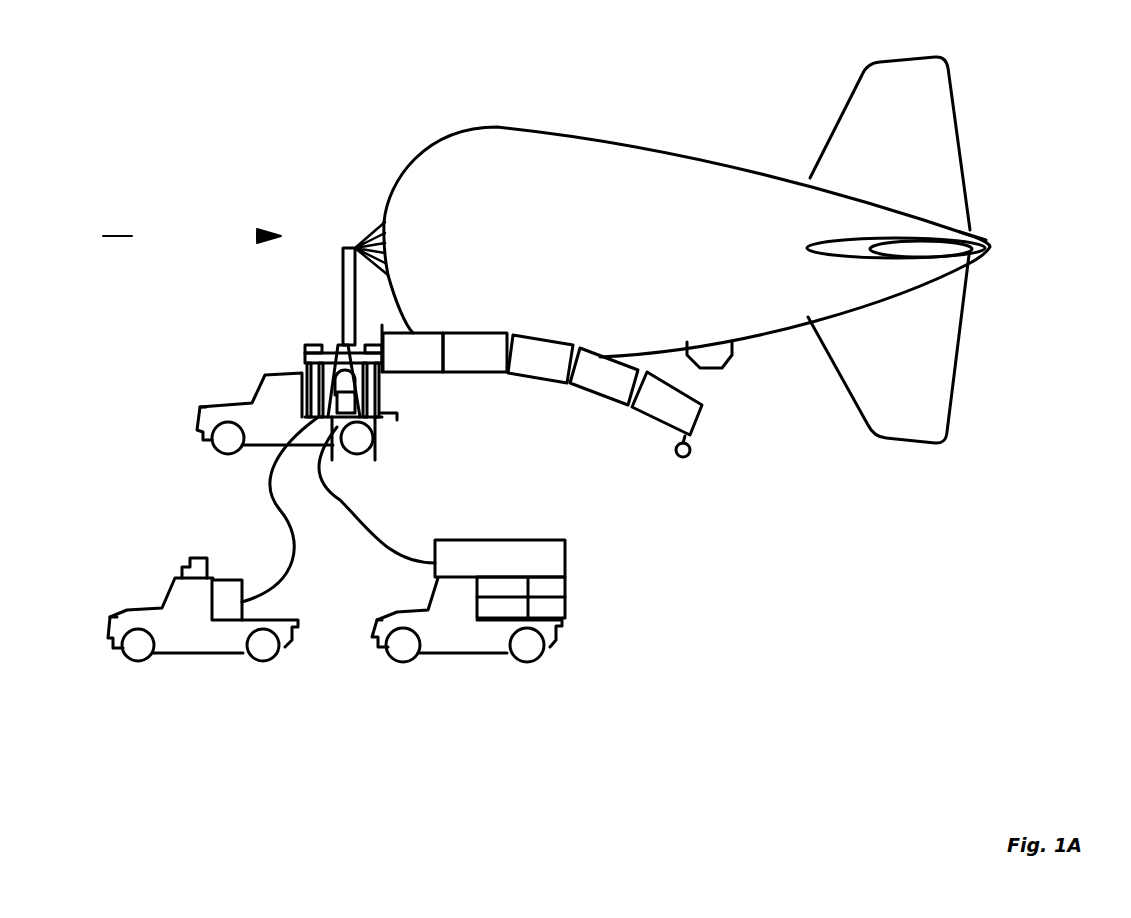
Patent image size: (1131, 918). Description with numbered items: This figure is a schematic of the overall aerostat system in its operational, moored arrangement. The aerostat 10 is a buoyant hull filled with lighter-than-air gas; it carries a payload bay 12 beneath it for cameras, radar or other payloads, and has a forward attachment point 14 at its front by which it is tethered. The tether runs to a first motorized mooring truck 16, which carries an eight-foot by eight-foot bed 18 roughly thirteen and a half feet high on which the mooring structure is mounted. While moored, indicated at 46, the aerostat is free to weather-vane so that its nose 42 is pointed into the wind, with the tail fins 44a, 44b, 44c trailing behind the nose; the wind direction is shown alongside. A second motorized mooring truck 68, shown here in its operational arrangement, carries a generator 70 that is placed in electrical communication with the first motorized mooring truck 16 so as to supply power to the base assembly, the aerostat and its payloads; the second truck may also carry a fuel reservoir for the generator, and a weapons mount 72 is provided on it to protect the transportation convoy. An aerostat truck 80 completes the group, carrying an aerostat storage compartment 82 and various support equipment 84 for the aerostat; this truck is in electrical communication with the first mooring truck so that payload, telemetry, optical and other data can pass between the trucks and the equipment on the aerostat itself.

The aerostat 10 is at (587, 138).
The payload bay 12 is at (732, 346).
The forward attachment point 14 is at (353, 248).
The first motorized mooring truck 16 is at (202, 427).
The bed 18 is at (387, 417).
The nose 42 is at (372, 208).
The fin 44a is at (962, 155).
The fin 44b is at (978, 241).
The fin 44c is at (957, 385).
The moored condition 46 is at (177, 222).
The second motorized mooring truck 68 is at (110, 635).
The generator 70 is at (233, 577).
The weapons mount 72 is at (207, 558).
The aerostat truck 80 is at (373, 627).
The aerostat storage compartment 82 is at (505, 540).
The support equipment 84 is at (580, 603).